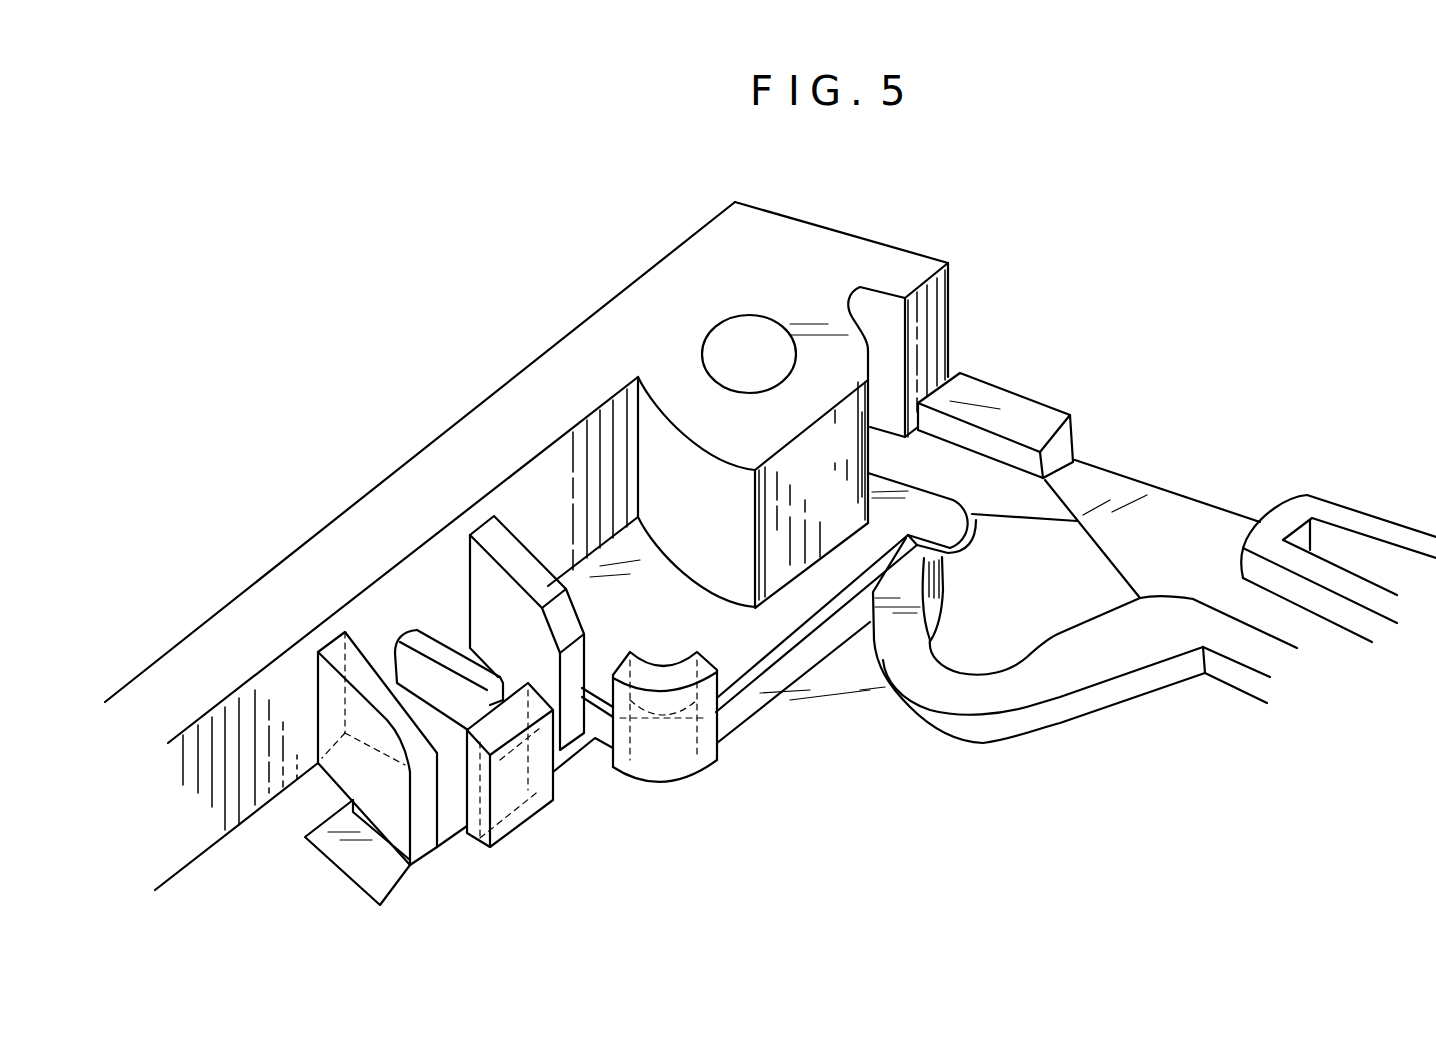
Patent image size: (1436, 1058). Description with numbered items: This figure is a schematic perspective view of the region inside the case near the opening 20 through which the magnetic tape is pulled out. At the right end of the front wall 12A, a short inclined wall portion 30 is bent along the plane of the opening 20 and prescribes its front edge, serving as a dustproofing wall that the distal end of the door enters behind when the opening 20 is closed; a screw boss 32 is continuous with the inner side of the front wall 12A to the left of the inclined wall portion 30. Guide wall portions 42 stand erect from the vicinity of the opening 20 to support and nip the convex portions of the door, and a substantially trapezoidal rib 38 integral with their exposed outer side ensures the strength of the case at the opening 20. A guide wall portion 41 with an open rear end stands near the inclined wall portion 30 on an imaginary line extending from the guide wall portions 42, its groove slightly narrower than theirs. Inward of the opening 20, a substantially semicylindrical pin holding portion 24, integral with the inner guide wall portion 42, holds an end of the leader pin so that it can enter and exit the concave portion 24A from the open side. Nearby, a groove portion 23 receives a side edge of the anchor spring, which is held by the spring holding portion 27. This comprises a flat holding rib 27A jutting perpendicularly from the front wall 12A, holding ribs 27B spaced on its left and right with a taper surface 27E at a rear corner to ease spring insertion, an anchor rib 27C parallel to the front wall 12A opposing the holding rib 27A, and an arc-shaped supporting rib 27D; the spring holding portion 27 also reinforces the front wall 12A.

The front wall 12A is at (408, 458).
The opening 20 is at (1150, 480).
The groove portions 23 is at (750, 695).
The pin holding portions 24 is at (990, 722).
The concave portions 24A is at (930, 635).
The spring holding portions 27 is at (570, 783).
The holding rib 27A is at (415, 630).
The holding ribs 27B is at (490, 592).
The anchor rib 27C is at (520, 812).
The supporting rib 27D is at (667, 783).
The taper surface 27E is at (566, 613).
The inclined wall portions 30 is at (920, 267).
The screw bosses 32 is at (742, 327).
The ribs 38 is at (1372, 518).
The guide wall portions 41 is at (935, 512).
The guide wall portions 42 is at (1347, 613).